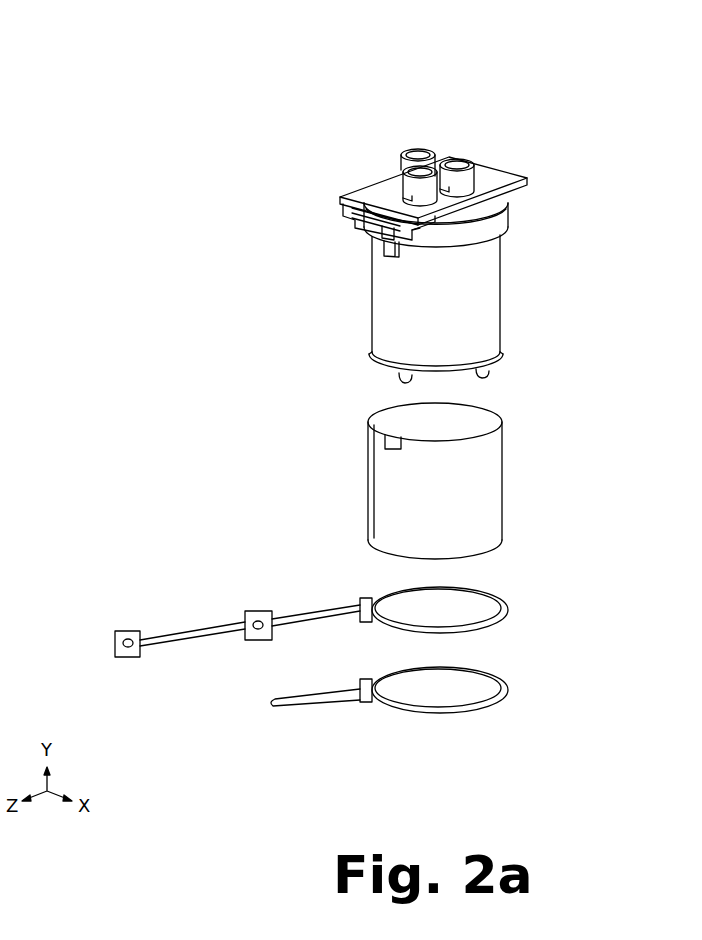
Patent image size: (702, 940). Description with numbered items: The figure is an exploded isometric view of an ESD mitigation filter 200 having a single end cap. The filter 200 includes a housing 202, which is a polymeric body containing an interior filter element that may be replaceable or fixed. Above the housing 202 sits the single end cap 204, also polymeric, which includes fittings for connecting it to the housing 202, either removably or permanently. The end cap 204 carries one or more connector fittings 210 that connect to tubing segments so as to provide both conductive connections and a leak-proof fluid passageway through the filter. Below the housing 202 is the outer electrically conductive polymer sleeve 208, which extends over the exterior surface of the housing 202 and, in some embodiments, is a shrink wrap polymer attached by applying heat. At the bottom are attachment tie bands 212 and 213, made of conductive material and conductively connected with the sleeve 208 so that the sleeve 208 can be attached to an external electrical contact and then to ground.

The filter 200 is at (270, 68).
The housing 202 is at (490, 318).
The end cap 204 is at (505, 205).
The electrically conductive polymer sleeve 208 is at (492, 472).
The connector fittings 210 is at (400, 184).
The attachment tie band 212 is at (173, 630).
The attachment tie band 213 is at (297, 696).